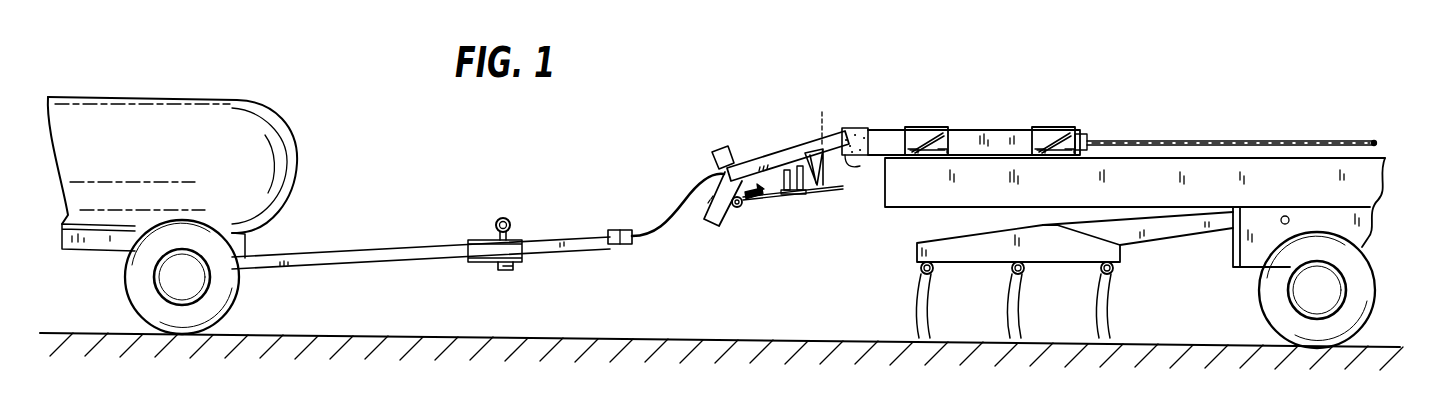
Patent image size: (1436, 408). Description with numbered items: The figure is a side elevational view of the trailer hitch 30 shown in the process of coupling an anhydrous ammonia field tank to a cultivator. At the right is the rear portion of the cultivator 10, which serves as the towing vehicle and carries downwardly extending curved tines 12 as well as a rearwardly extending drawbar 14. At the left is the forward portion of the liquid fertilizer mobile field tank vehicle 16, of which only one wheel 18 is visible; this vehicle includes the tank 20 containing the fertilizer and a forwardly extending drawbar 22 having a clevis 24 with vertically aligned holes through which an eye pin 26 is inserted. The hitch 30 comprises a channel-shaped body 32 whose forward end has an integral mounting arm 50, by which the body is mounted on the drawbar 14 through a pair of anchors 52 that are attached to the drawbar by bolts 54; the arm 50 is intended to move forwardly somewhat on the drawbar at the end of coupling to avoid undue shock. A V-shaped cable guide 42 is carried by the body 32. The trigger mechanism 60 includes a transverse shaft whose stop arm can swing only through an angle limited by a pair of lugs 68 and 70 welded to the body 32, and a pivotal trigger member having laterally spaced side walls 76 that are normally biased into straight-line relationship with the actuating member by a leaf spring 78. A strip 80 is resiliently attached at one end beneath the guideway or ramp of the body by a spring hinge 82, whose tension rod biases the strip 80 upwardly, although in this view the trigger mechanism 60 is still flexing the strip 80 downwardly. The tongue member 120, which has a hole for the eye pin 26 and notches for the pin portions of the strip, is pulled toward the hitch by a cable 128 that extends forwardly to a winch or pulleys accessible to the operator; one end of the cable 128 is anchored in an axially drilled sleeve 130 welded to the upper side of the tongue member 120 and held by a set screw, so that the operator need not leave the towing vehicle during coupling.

The cultivator 10 is at (1126, 210).
The curved tines 12 is at (1005, 310).
The drawbar 14 is at (918, 207).
The liquid fertilizer mobile field tank vehicle 16 is at (205, 179).
The wheel 18 is at (241, 302).
The tank 20 is at (300, 166).
The drawbar 22 is at (370, 255).
The clevis 24 is at (480, 262).
The eye pin 26 is at (508, 217).
The trailer hitch 30 is at (730, 170).
The channel-shaped body 32 is at (763, 145).
The V-shaped cable guide 42 is at (720, 146).
The mounting arm 50 is at (1002, 128).
The anchors 52 is at (922, 128).
The bolts 54 is at (940, 133).
The trigger mechanism 60 is at (834, 172).
The lug 68 is at (848, 152).
The lug 70 is at (800, 166).
The side walls 76 is at (821, 118).
The leaf spring 78 is at (816, 186).
The strip 80 is at (779, 200).
The spring hinge 82 is at (742, 214).
The tongue member 120 is at (555, 252).
The cable 128 is at (667, 220).
The sleeve 130 is at (620, 230).